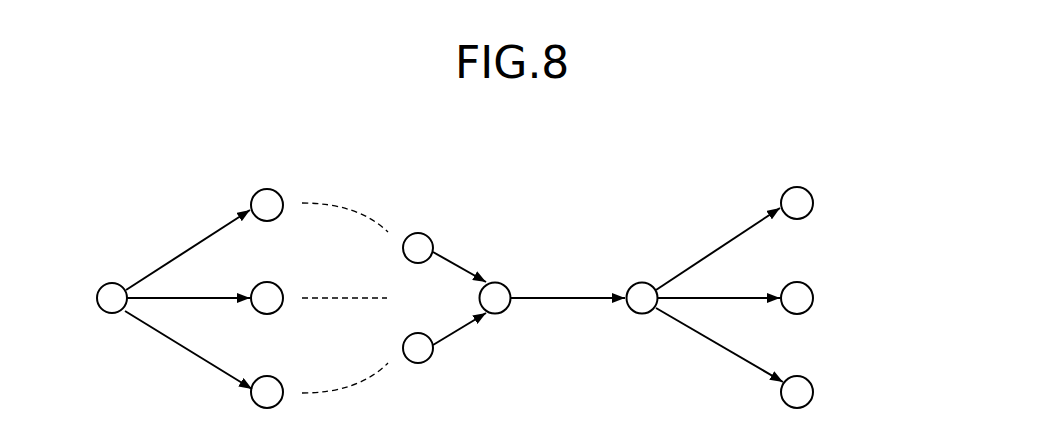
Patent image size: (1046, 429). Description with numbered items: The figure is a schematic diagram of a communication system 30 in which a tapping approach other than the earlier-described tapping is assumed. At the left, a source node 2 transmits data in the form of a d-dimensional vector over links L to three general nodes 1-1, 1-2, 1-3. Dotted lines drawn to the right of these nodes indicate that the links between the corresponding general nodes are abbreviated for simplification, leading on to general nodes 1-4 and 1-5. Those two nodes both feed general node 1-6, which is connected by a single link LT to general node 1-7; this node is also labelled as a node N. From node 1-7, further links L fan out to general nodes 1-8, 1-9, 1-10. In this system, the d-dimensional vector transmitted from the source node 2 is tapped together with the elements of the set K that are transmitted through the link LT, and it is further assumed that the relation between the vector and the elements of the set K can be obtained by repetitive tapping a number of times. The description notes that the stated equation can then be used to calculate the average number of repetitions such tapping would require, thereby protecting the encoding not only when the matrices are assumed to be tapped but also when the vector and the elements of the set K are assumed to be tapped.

The communication system 30 is at (656, 164).
The source node 2 is at (114, 283).
The link L is at (190, 248).
The link LT is at (581, 297).
The node N is at (643, 282).
The general node 1-1 is at (281, 193).
The general node 1-2 is at (281, 286).
The general node 1-3 is at (281, 380).
The general node 1-4 is at (429, 238).
The general node 1-5 is at (429, 359).
The general node 1-6 is at (496, 314).
The general node 1-7 is at (642, 314).
The general node 1-8 is at (809, 192).
The general node 1-9 is at (809, 287).
The general node 1-10 is at (809, 381).